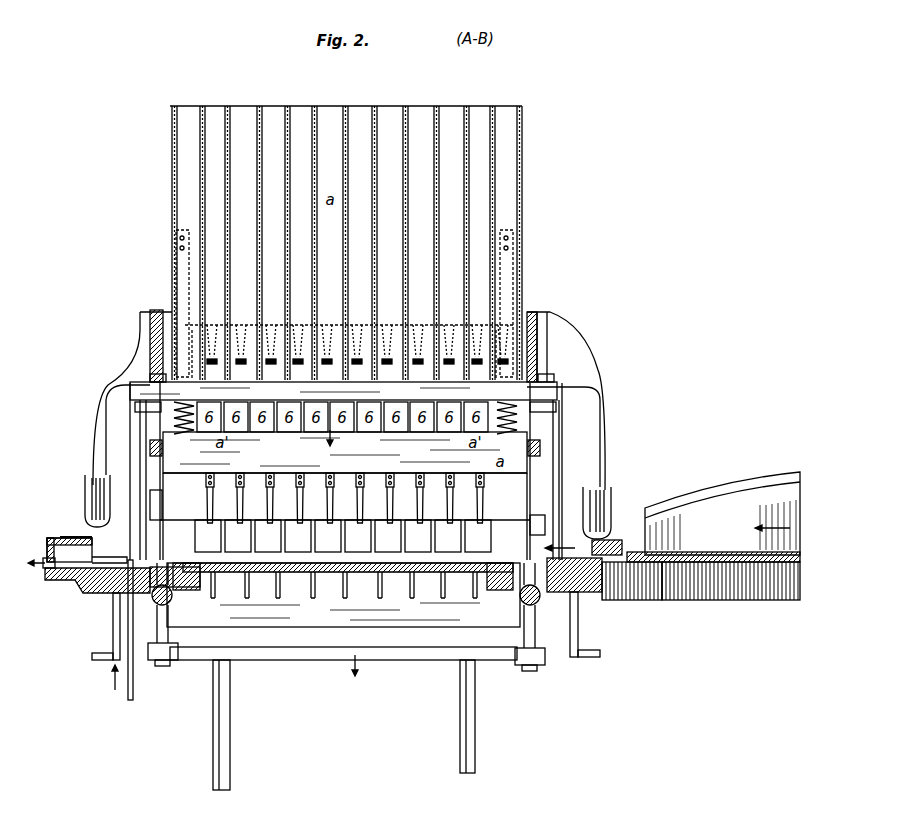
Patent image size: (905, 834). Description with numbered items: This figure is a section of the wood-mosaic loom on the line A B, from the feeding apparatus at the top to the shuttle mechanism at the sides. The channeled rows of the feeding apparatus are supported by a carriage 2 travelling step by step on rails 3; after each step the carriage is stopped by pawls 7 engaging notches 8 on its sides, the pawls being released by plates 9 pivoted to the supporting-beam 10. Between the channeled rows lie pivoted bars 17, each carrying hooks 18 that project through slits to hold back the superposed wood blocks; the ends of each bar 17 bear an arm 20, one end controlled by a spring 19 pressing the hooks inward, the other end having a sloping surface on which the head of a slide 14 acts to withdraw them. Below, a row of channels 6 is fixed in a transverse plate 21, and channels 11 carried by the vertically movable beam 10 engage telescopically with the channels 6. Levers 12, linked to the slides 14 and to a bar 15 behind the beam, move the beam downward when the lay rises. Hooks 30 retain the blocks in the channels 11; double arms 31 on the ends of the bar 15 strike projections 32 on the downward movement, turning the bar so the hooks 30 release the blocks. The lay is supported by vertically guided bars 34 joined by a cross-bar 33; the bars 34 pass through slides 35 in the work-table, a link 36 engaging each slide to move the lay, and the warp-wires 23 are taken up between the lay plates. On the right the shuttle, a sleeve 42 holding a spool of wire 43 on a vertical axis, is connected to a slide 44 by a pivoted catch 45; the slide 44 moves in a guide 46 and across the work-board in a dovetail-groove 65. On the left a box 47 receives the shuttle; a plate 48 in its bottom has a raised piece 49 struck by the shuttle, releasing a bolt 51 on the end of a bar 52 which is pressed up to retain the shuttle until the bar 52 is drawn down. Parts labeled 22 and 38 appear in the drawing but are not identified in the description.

The carriage 2 is at (540, 312).
The rails 3 is at (93, 487).
The channels 6 is at (342, 417).
The pawls 7 is at (150, 413).
The notches 8 is at (158, 380).
The plates 9 is at (150, 448).
The supporting-beam 10 is at (345, 452).
The channels 11 is at (345, 536).
The levers 12 is at (163, 478).
The slides 14 is at (174, 420).
The bar 15 is at (380, 486).
The bar 17 is at (391, 325).
The hooks 18 is at (211, 323).
The spring 19 is at (178, 252).
The arm 20 is at (178, 346).
The transverse plate 21 is at (343, 391).
The beam 22 is at (300, 605).
The warp-wires 23 is at (307, 574).
The hooks 30 is at (345, 498).
The double arm 31 is at (140, 472).
The projections 32 is at (162, 512).
The cross-bar 33 is at (315, 658).
The bars 34 is at (168, 622).
The slides 35 is at (172, 600).
The link 36 is at (120, 612).
The leg 38 is at (230, 690).
The sleeve 42 is at (606, 540).
The spool of wire 43 is at (632, 581).
The slide 44 is at (731, 581).
The catch 45 is at (648, 551).
The guide 46 is at (722, 492).
The box 47 is at (62, 537).
The plate 48 is at (55, 570).
The raised piece 49 is at (55, 550).
The bolt 51 is at (112, 592).
The bar 52 is at (133, 692).
The dovetail-groove 65 is at (206, 563).